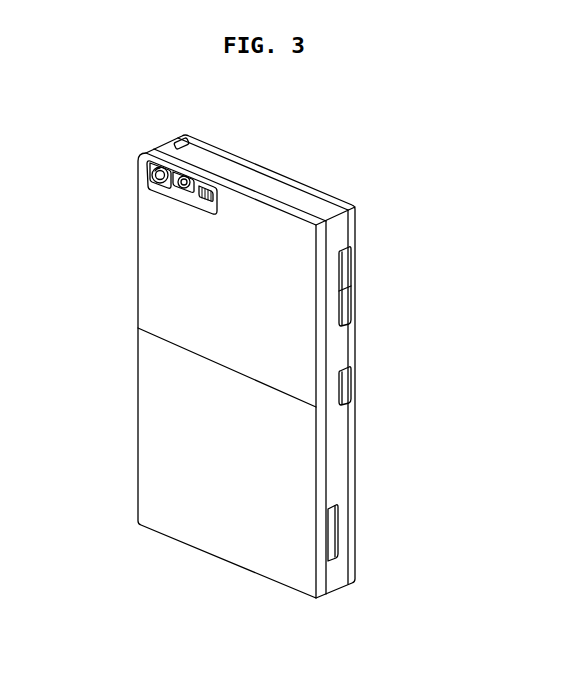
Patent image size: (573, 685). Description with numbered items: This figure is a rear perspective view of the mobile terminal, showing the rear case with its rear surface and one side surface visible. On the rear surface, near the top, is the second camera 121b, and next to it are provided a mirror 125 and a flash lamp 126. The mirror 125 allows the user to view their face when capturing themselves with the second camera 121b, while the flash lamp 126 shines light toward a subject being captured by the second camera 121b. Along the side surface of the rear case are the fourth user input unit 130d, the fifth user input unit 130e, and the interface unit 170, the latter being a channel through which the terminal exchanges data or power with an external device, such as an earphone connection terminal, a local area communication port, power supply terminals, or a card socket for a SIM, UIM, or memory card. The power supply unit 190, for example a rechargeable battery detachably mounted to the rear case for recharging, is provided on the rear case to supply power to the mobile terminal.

The second camera 121b is at (183, 178).
The mirror 125 is at (150, 175).
The flash lamp 126 is at (210, 193).
The fourth user input unit 130d is at (348, 263).
The fifth user input unit 130e is at (346, 378).
The interface unit 170 is at (333, 538).
The power supply unit 190 is at (156, 427).